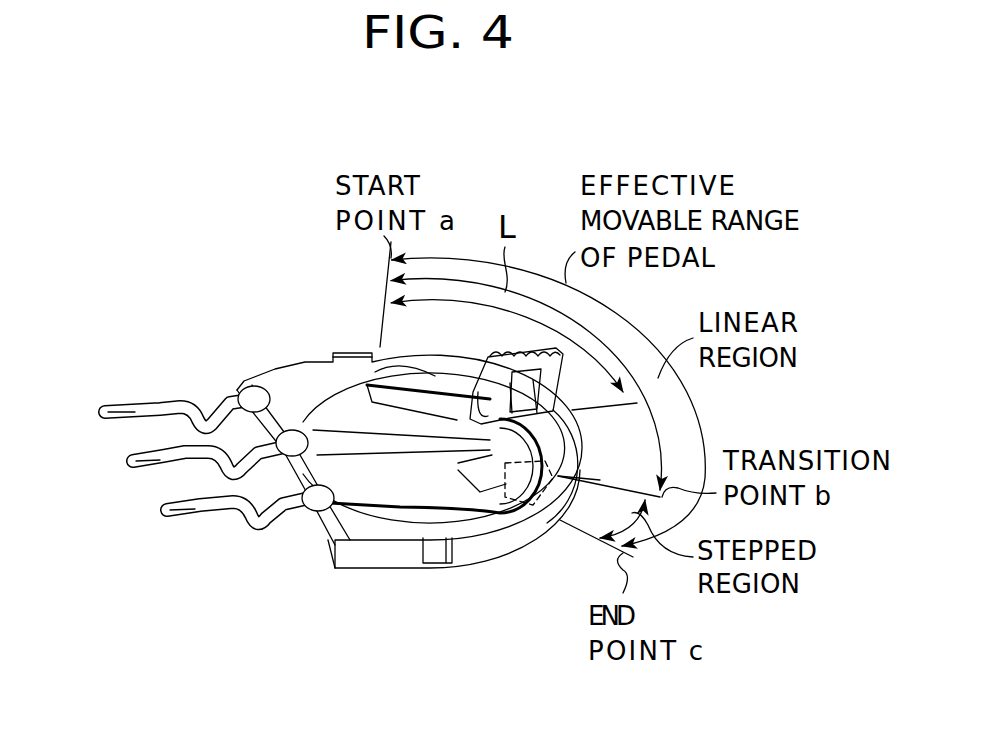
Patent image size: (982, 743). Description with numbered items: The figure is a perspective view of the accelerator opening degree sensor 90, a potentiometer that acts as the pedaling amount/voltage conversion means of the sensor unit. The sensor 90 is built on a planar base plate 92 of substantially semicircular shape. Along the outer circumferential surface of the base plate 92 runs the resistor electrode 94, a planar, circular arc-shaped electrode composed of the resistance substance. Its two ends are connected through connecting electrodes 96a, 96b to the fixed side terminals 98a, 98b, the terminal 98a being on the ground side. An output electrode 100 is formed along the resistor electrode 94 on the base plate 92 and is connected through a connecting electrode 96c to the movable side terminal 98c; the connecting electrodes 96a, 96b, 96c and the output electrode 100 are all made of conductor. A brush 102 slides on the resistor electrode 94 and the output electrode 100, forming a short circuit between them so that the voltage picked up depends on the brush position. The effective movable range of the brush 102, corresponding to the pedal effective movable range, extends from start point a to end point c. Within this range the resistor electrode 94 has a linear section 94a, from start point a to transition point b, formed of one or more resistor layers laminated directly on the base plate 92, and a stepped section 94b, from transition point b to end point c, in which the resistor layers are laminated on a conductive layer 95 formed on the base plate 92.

The sensor 90 is at (447, 451).
The base plate 92 is at (383, 570).
The resistor electrode 94 is at (368, 388).
The linear section 94a is at (555, 442).
The stepped section 94b is at (500, 508).
The conductive layer 95 is at (540, 510).
The connecting electrode 96a is at (352, 378).
The connecting electrode 96b is at (453, 512).
The connecting electrode 96c is at (327, 540).
The terminal 98a is at (127, 402).
The terminal 98b is at (170, 507).
The terminal 98c is at (133, 455).
The output electrode 100 is at (460, 463).
The brush 102 is at (490, 352).